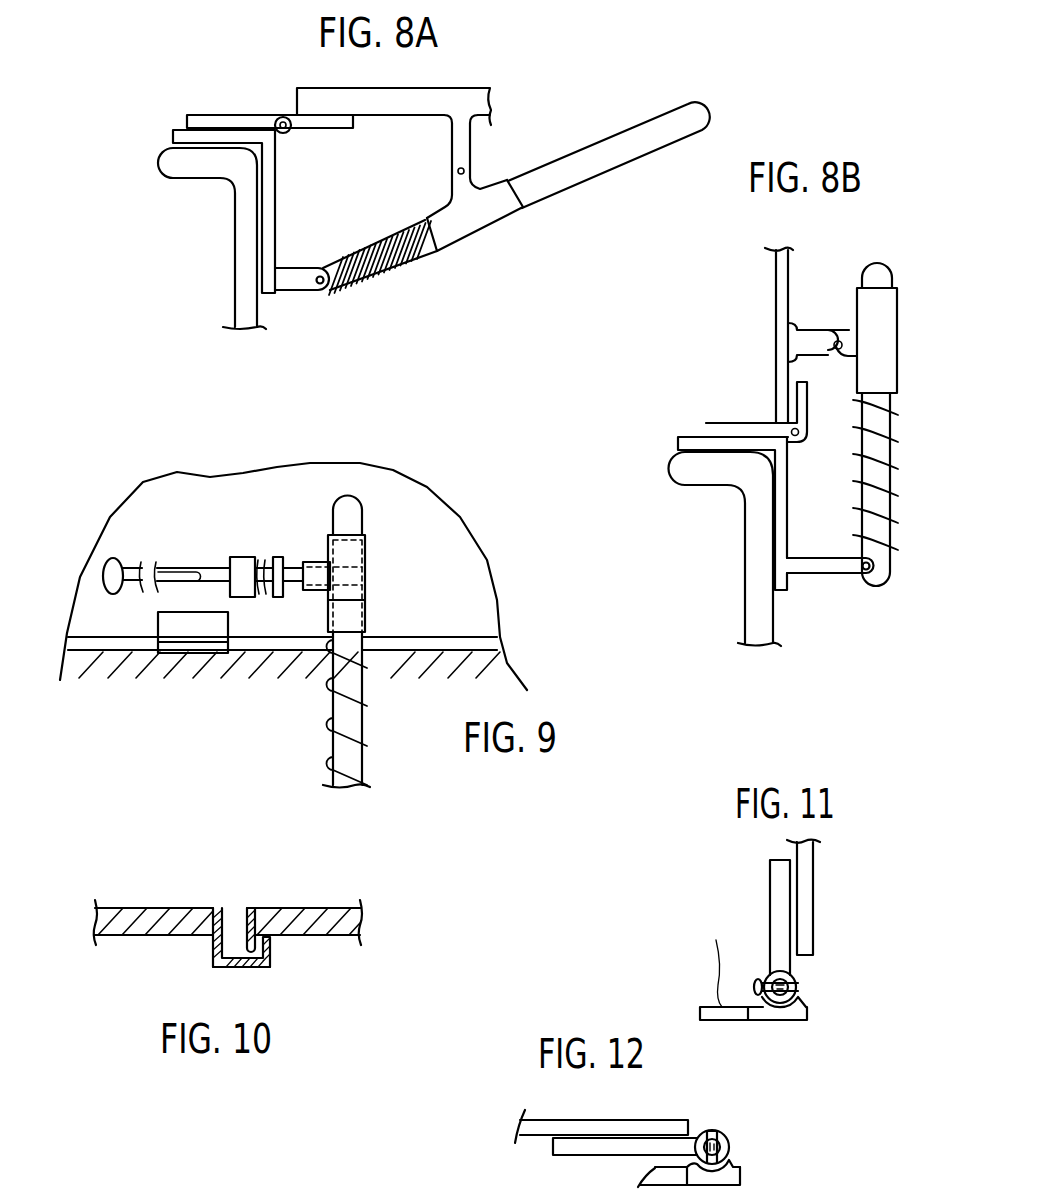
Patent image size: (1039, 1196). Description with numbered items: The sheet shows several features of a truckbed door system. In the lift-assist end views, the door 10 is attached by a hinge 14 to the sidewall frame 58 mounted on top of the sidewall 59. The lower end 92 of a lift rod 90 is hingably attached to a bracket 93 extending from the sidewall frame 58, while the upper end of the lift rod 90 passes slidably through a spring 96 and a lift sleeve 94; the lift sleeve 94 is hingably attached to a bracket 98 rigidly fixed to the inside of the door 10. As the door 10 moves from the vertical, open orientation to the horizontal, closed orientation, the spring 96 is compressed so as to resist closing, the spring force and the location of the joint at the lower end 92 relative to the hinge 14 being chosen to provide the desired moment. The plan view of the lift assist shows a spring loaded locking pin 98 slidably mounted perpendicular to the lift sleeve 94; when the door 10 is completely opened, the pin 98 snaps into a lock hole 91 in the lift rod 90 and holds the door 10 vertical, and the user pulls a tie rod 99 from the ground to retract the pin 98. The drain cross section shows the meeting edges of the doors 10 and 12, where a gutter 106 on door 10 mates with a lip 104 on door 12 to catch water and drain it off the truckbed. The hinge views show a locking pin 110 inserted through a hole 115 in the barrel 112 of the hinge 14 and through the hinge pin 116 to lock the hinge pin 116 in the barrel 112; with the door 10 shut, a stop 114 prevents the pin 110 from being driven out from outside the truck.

In FIG. 8A, the door 10 is at (487, 90).
In FIG. 8B, the door 10 is at (786, 268).
In FIG. 9, the door 10 is at (468, 535).
In FIG. 10, the door 10 is at (155, 910).
In FIG. 11, the door 10 is at (808, 923).
In FIG. 12, the door 10 is at (567, 1127).
In FIG. 10, the door 12 is at (315, 920).
In FIG. 8A, the hinge 14 is at (233, 118).
In FIG. 8B, the hinge 14 is at (763, 425).
In FIG. 11, the hinge 14 is at (775, 915).
In FIG. 12, the hinge 14 is at (597, 1155).
In FIG. 8A, the sidewall frame 58 is at (172, 133).
In FIG. 8B, the sidewall frame 58 is at (692, 443).
In FIG. 8A, the sidewall 59 is at (242, 228).
In FIG. 8B, the sidewall 59 is at (690, 477).
In FIG. 8A, the lift rod 90 is at (662, 140).
In FIG. 8B, the lift rod 90 is at (874, 268).
In FIG. 9, the lift rod 90 is at (353, 520).
In FIG. 9, the lock hole 91 is at (362, 588).
In FIG. 8A, the lower end 92 is at (323, 287).
In FIG. 8B, the lower end 92 is at (878, 567).
In FIG. 8A, the bracket 93 is at (308, 290).
In FIG. 8B, the bracket 93 is at (838, 562).
In FIG. 8A, the lift sleeve 94 is at (458, 230).
In FIG. 8B, the lift sleeve 94 is at (858, 353).
In FIG. 9, the lift sleeve 94 is at (348, 623).
In FIG. 8A, the spring 96 is at (363, 280).
In FIG. 8B, the spring 96 is at (893, 490).
In FIG. 9, the spring 96 is at (365, 740).
In FIG. 8A, the bracket / locking pin 98 is at (463, 145).
In FIG. 8B, the bracket / locking pin 98 is at (800, 333).
In FIG. 9, the bracket / locking pin 98 is at (362, 573).
In FIG. 9, the tie rod 99 is at (170, 572).
In FIG. 10, the lip 104 is at (243, 932).
In FIG. 10, the gutter 106 is at (217, 963).
In FIG. 11, the locking pin 110 is at (797, 988).
In FIG. 12, the locking pin 110 is at (715, 1137).
In FIG. 11, the barrel 112 is at (792, 975).
In FIG. 12, the barrel 112 is at (730, 1137).
In FIG. 11, the stop 114 is at (805, 1021).
In FIG. 12, the stop 114 is at (733, 1177).
In FIG. 11, the hole 115 is at (768, 975).
In FIG. 12, the hole 115 is at (708, 1130).
In FIG. 11, the hinge pin 116 is at (777, 997).
In FIG. 12, the hinge pin 116 is at (728, 1148).